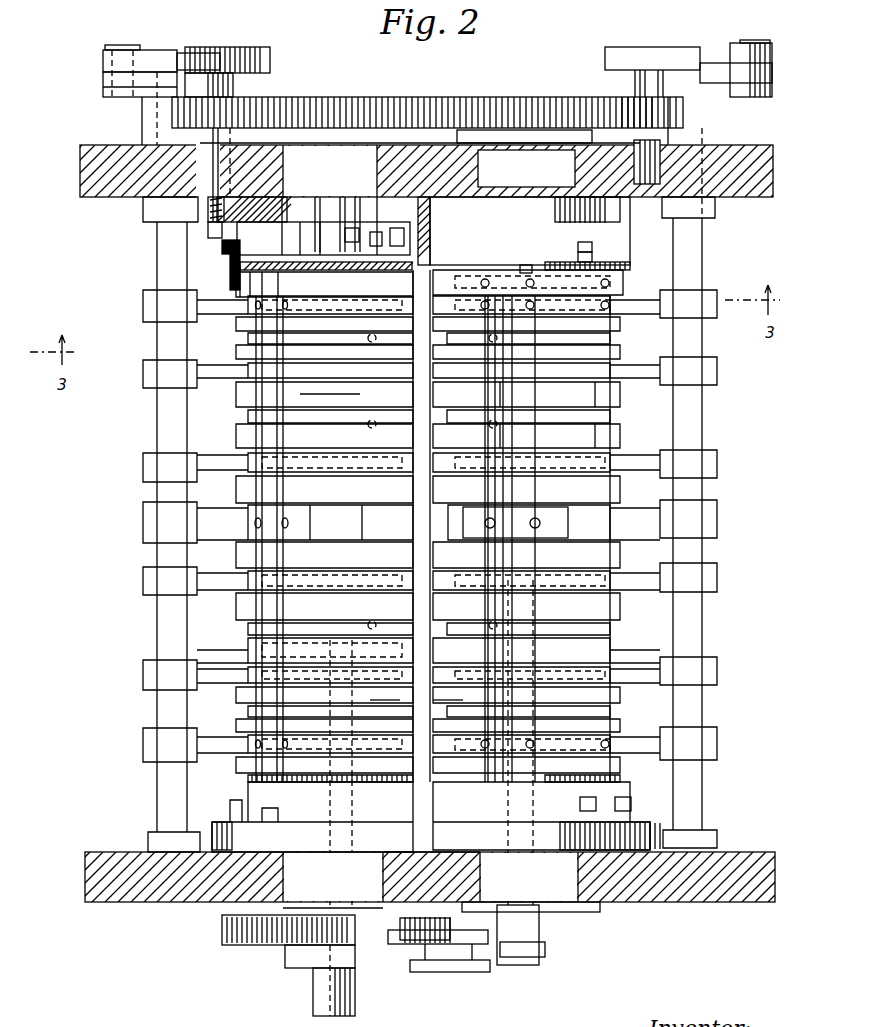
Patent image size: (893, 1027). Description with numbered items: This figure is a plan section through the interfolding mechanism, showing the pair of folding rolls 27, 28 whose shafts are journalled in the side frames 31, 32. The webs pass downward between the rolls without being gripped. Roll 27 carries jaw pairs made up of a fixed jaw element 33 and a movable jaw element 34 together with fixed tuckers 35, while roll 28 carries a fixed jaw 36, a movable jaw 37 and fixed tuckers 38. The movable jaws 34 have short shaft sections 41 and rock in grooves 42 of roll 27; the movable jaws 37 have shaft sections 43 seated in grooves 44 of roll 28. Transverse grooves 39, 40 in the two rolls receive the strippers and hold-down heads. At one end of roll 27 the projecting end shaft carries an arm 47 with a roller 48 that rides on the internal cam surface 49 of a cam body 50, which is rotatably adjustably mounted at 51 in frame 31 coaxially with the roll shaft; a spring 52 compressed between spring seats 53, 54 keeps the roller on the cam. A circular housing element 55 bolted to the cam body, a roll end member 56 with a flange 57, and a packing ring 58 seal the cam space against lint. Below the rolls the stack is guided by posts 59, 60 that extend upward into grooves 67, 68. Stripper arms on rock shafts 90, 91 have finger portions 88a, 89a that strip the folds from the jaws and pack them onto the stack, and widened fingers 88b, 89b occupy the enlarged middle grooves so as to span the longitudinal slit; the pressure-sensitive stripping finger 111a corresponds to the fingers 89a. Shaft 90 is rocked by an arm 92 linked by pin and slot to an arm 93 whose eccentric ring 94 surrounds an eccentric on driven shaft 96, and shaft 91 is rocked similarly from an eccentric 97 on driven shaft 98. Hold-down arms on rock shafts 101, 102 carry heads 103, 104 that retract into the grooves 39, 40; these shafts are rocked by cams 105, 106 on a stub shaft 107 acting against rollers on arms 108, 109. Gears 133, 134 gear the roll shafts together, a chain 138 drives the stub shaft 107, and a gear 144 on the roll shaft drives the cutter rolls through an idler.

The folding roll 27 is at (238, 396).
The folding roll 28 is at (618, 395).
The side frame 31 is at (773, 164).
The side frame 32 is at (773, 868).
The fixed jaw element 33 is at (265, 396).
The movable jaw element 34 is at (296, 396).
The tucker 35 is at (362, 396).
The fixed jaw 36 is at (528, 434).
The movable jaw 37 is at (531, 445).
The fixed tucker 38 is at (593, 395).
The groove 39 is at (245, 457).
The groove 40 is at (624, 362).
The shaft section 41 is at (403, 275).
The groove 42 is at (253, 365).
The shaft section 43 is at (528, 371).
The groove 44 is at (486, 371).
The arm 47 is at (435, 238).
The roller 48 is at (430, 216).
The internal cam surface 49 is at (264, 218).
The cam body 50 is at (212, 224).
The adjustable mounting 51 is at (290, 192).
The spring 52 is at (335, 270).
The spring seat 53 is at (313, 238).
The spring seat 54 is at (350, 220).
The circular housing element 55 is at (223, 252).
The roll end member 56 is at (236, 286).
The flange 57 is at (258, 276).
The packing ring 58 is at (230, 270).
The guide post 59 is at (372, 338).
The guide post 60 is at (488, 338).
The groove 67 is at (240, 413).
The groove 68 is at (622, 415).
The stripper finger 88a is at (240, 663).
The widened stripper finger 88b is at (243, 510).
The stripper finger 89a is at (480, 666).
The widened stripper finger 89b is at (636, 506).
The shaft 90 is at (157, 340).
The shaft 91 is at (702, 340).
The arm 92 is at (108, 98).
The arm 93 is at (152, 50).
The eccentric ring 94 is at (226, 48).
The driven shaft 96 is at (223, 164).
The eccentric 97 is at (680, 48).
The driven shaft 98 is at (634, 163).
The shaft 101 is at (330, 879).
The shaft 102 is at (538, 958).
The head 103 is at (352, 691).
The head 104 is at (480, 697).
The cam 105 is at (482, 908).
The cam 106 is at (403, 944).
The stub shaft 107 is at (417, 862).
The arm 108 is at (364, 942).
The arm 109 is at (507, 952).
The stripping finger 111a is at (450, 282).
The gear 133 is at (347, 96).
The gear 134 is at (518, 98).
The chain 138 is at (460, 974).
The gear 144 is at (222, 930).